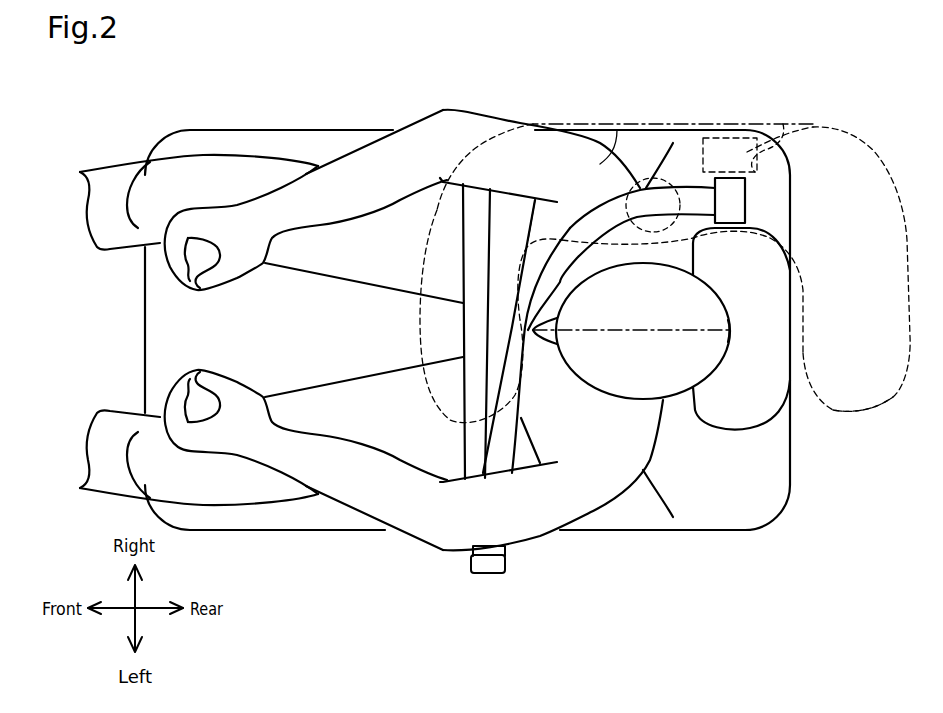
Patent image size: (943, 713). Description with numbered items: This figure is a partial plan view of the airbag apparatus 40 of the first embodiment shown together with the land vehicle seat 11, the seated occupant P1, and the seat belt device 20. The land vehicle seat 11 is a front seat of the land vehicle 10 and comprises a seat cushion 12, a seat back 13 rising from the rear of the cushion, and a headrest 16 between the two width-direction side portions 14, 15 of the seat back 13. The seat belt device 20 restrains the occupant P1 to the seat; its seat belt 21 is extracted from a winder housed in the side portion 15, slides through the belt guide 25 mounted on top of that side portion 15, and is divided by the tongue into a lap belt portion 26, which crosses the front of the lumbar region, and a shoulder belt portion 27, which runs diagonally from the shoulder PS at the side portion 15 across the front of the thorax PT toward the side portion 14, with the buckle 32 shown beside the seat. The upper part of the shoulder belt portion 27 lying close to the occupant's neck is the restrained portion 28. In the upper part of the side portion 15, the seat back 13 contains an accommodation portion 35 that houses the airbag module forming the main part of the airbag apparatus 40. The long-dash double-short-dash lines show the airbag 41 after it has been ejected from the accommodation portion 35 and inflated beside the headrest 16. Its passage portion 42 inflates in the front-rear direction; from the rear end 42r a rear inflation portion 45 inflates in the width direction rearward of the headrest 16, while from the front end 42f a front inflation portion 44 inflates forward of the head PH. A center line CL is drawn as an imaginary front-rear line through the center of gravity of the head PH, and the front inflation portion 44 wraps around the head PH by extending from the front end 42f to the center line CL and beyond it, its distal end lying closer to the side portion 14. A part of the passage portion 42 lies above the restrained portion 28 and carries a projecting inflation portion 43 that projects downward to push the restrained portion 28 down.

The land vehicle 10 is at (500, 337).
The land vehicle seat 11 is at (516, 337).
The seat cushion 12 is at (249, 140).
The seat back 13 is at (790, 484).
The side portion 14 is at (723, 507).
The side portion 15 is at (728, 160).
The headrest 16 is at (773, 283).
The seat belt device 20 is at (441, 330).
The seat belt 21 is at (441, 330).
The belt guide 25 is at (737, 200).
The lap belt portion 26 is at (473, 317).
The shoulder belt portion 27 is at (513, 360).
The restrained portion 28 is at (643, 207).
The buckle 32 is at (488, 577).
The accommodation portion 35 is at (785, 131).
The airbag apparatus 40 is at (567, 100).
The airbag 41 is at (616, 271).
The passage portion 42 is at (616, 271).
The front end 42f is at (487, 144).
The rear end 42r is at (816, 126).
The projecting inflation portion 43 is at (650, 207).
The front inflation portion 44 is at (427, 237).
The rear inflation portion 45 is at (853, 411).
The shoulder PS is at (617, 130).
The thorax PT is at (530, 228).
The head PH is at (730, 322).
The occupant P1 is at (663, 400).
The center line CL is at (583, 333).